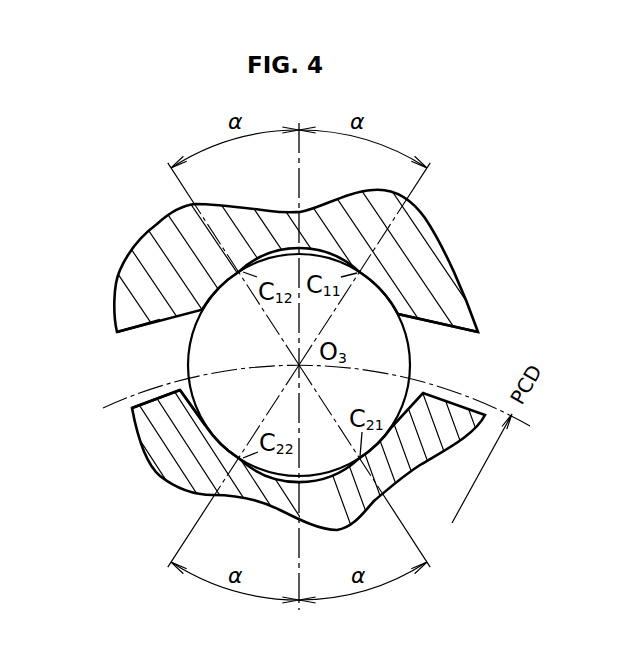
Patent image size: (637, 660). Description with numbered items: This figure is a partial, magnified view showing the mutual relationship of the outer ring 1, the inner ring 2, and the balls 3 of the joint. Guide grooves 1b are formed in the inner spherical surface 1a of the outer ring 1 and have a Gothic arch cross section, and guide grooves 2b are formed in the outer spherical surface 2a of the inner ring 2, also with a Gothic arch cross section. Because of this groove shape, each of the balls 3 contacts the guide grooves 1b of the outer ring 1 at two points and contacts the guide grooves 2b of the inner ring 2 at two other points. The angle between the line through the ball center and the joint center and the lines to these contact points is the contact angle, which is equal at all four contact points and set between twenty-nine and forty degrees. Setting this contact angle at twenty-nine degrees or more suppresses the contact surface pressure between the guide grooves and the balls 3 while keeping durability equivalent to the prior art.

The outer ring 1 is at (423, 250).
The inner spherical surface 1a is at (142, 327).
The guide grooves 1b is at (372, 283).
The inner ring 2 is at (175, 463).
The outer spherical surface 2a is at (141, 400).
The guide grooves 2b is at (215, 419).
The balls 3 is at (196, 353).